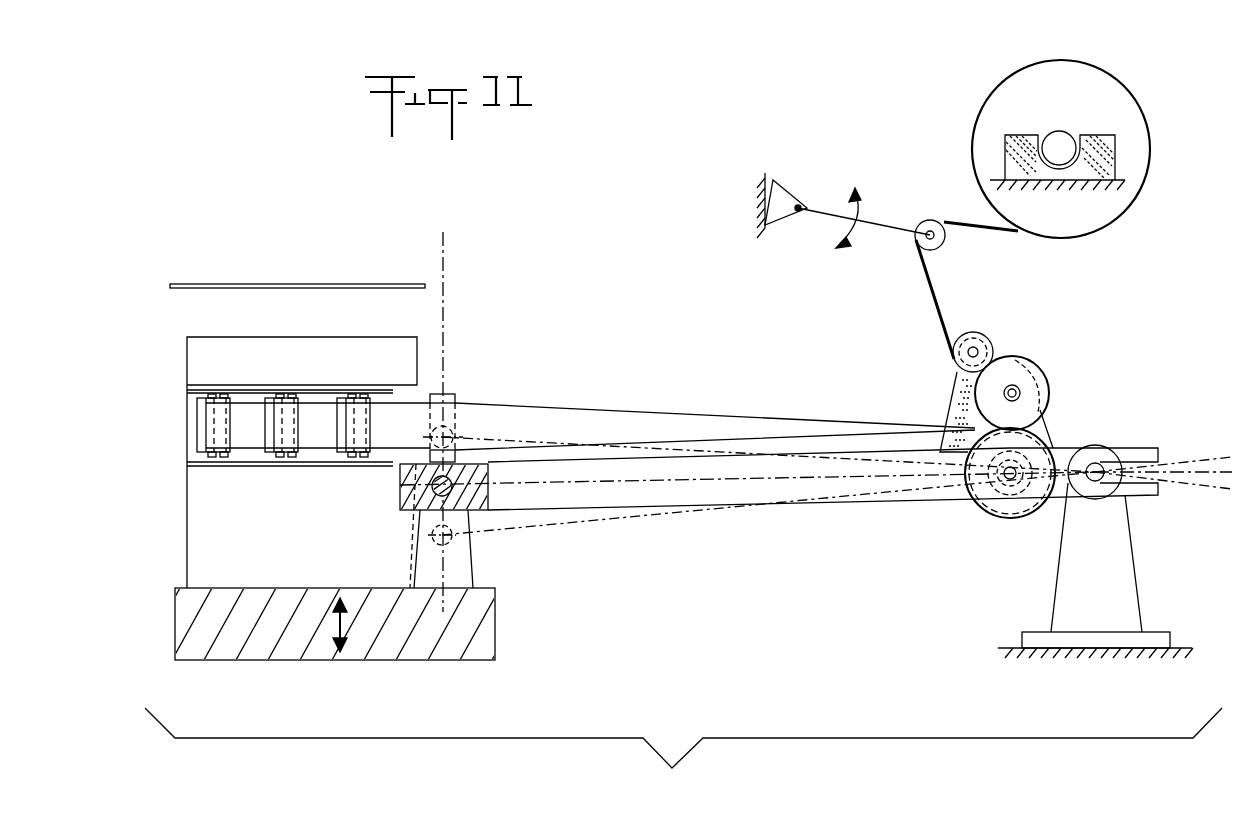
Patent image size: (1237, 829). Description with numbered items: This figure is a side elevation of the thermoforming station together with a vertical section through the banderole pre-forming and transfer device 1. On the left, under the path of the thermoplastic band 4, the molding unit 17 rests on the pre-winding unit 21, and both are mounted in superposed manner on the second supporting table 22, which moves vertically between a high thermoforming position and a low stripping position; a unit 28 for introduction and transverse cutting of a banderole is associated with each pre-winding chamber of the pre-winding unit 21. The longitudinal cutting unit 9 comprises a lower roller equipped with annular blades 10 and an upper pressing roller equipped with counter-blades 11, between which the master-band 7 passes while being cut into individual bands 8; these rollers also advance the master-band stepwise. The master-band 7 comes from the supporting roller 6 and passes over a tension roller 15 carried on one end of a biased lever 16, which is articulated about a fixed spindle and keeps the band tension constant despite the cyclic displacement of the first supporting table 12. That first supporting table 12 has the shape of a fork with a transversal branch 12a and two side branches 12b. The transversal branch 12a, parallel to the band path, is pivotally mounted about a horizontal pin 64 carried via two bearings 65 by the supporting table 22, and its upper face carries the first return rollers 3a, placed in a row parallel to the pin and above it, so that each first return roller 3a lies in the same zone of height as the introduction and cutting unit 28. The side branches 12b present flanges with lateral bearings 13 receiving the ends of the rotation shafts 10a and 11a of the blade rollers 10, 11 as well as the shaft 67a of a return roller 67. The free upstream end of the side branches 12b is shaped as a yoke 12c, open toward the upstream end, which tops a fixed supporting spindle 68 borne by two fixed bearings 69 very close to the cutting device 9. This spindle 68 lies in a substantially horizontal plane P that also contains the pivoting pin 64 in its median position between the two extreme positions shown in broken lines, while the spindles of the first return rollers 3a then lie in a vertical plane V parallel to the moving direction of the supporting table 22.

The pre-forming and transfer device 1 is at (683, 757).
The first return roller 3a is at (455, 395).
The thermoplastic band 4 is at (275, 283).
The supporting roller 6 is at (1122, 110).
The master-band 7 is at (935, 296).
The individual bands 8 is at (646, 412).
The longitudinal cutting unit 9 is at (1055, 429).
The lower roller equipped with annular blades 10 is at (985, 516).
The rotation shaft of blade roller 10 10a is at (1010, 505).
The upper pressing roller equipped with counter-blades 11 is at (1036, 374).
The rotation shaft of blade roller 11 11a is at (1022, 393).
The first supporting table 12 is at (835, 510).
The transversal branch 12a is at (400, 492).
The side branches 12b is at (614, 494).
The yoke 12c is at (1150, 448).
The lateral bearings 13 is at (958, 392).
The tension roller 15 is at (945, 239).
The biased lever 16 is at (886, 228).
The molding unit 17 is at (187, 356).
The pre-winding unit 21 is at (187, 425).
The second supporting table 22 is at (276, 662).
The unit for introduction and transverse cutting of a banderole 28 is at (216, 476).
The horizontal pin 64 is at (413, 534).
The bearings 65 is at (466, 570).
The return roller 67 is at (980, 342).
The shaft of return roller 67a is at (966, 354).
The fixed supporting spindle 68 is at (1103, 490).
The fixed bearings 69 is at (1115, 567).
The vertical plane V is at (445, 262).
The horizontal plane P is at (748, 476).